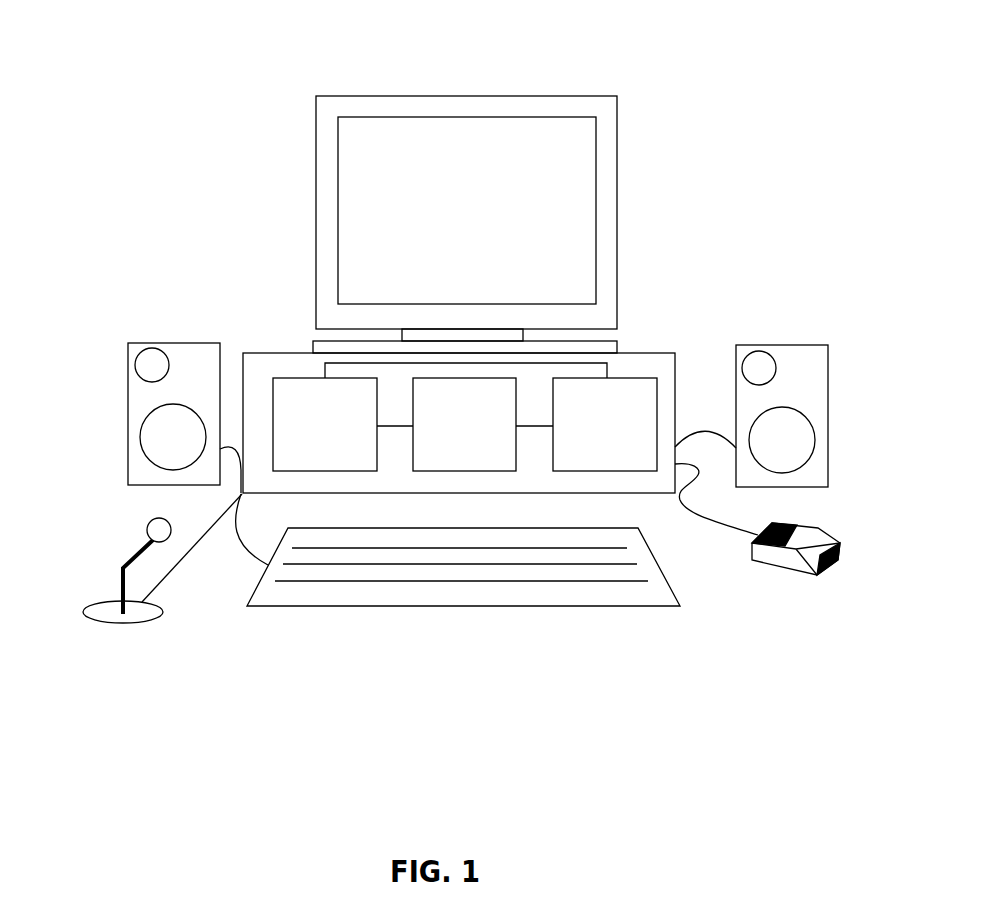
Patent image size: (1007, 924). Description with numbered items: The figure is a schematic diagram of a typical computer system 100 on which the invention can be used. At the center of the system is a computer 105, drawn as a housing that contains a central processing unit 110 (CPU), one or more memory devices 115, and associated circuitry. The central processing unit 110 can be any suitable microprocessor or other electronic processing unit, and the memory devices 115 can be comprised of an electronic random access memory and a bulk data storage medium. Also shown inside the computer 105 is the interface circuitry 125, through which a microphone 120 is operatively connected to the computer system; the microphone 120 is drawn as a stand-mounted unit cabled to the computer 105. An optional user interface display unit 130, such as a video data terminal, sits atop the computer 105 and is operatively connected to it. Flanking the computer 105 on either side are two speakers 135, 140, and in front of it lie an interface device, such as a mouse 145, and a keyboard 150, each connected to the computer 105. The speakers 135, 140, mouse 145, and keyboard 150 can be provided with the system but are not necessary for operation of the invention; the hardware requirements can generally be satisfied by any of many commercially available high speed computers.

The computer system 100 is at (78, 35).
The computer 105 is at (419, 354).
The central processing unit 110 is at (325, 424).
The memory devices 115 is at (464, 424).
The microphone 120 is at (93, 621).
The interface circuitry 125 is at (605, 424).
The user interface display unit 130 is at (617, 155).
The speaker 135 is at (128, 415).
The speaker 140 is at (828, 382).
The mouse 145 is at (798, 577).
The keyboard 150 is at (570, 606).